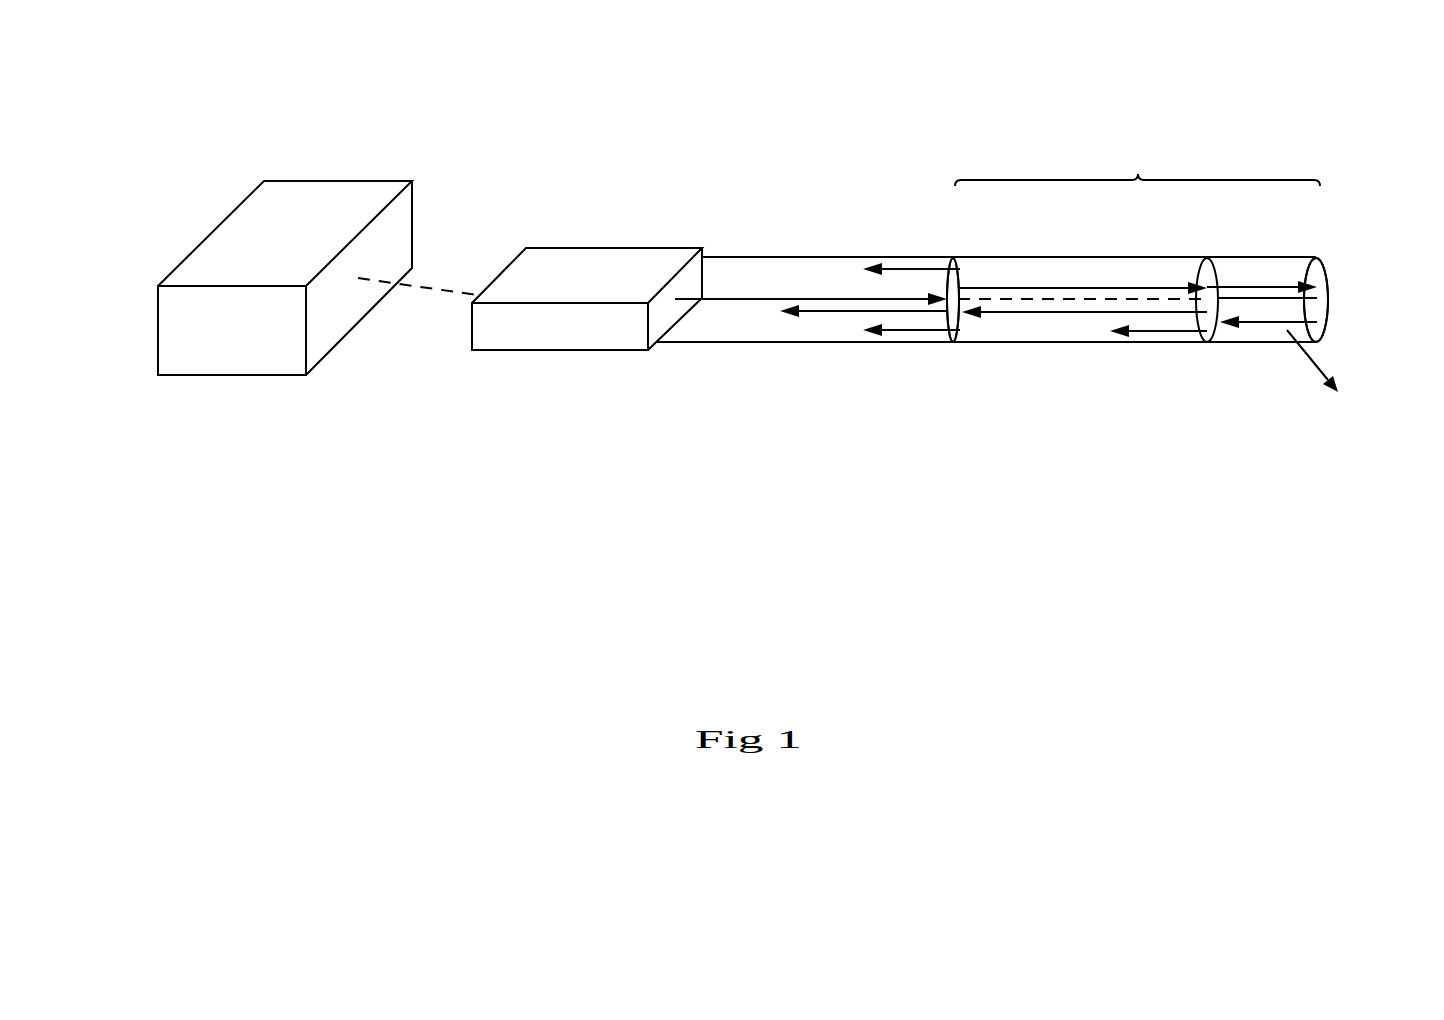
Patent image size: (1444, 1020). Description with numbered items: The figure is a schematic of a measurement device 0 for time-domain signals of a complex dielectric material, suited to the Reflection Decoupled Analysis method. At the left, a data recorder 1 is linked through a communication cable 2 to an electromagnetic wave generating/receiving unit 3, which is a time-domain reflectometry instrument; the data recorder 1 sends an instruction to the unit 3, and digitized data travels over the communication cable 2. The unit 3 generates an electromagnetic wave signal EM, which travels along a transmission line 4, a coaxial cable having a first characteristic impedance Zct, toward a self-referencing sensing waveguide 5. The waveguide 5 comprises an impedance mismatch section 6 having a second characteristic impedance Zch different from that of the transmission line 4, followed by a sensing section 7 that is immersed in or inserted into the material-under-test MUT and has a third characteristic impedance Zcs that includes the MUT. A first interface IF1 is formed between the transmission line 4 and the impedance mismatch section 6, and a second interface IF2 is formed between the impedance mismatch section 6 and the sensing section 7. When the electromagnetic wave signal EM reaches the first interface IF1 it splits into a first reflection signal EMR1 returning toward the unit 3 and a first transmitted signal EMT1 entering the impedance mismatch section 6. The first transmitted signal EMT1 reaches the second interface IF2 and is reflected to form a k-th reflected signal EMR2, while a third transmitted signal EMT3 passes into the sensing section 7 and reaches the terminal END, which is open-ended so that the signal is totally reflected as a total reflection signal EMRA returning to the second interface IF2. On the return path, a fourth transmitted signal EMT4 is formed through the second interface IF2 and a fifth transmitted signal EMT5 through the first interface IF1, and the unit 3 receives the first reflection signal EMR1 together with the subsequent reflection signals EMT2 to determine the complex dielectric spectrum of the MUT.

The measurement device 0 is at (144, 83).
The data recorder 1 is at (322, 193).
The communication cable 2 is at (417, 328).
The electromagnetic wave generating/receiving unit 3 is at (599, 262).
The transmission line 4 is at (833, 257).
The self-referencing sensing waveguide 5 is at (1137, 243).
The impedance mismatch section 6 is at (1045, 342).
The sensing section 7 is at (1277, 343).
The electromagnetic wave signal EM is at (753, 298).
The first reflection signal EMR1 is at (923, 269).
The first transmitted signal EMT1 is at (1082, 288).
The subsequent reflection signals EMT2 is at (833, 313).
The third transmitted signal EMT3 is at (1258, 287).
The fourth transmitted signal EMT4 is at (1150, 331).
The fifth transmitted signal EMT5 is at (900, 330).
The k-th reflected signal EMR2 is at (1087, 312).
The total reflection signal EMRA is at (1312, 333).
The terminal END is at (1320, 268).
The first interface IF1 is at (959, 357).
The second interface IF2 is at (1204, 357).
The material-under-test MUT is at (1336, 377).
The first characteristic impedance Zct is at (718, 374).
The second characteristic impedance Zch is at (1014, 381).
The third characteristic impedance Zcs is at (1255, 381).